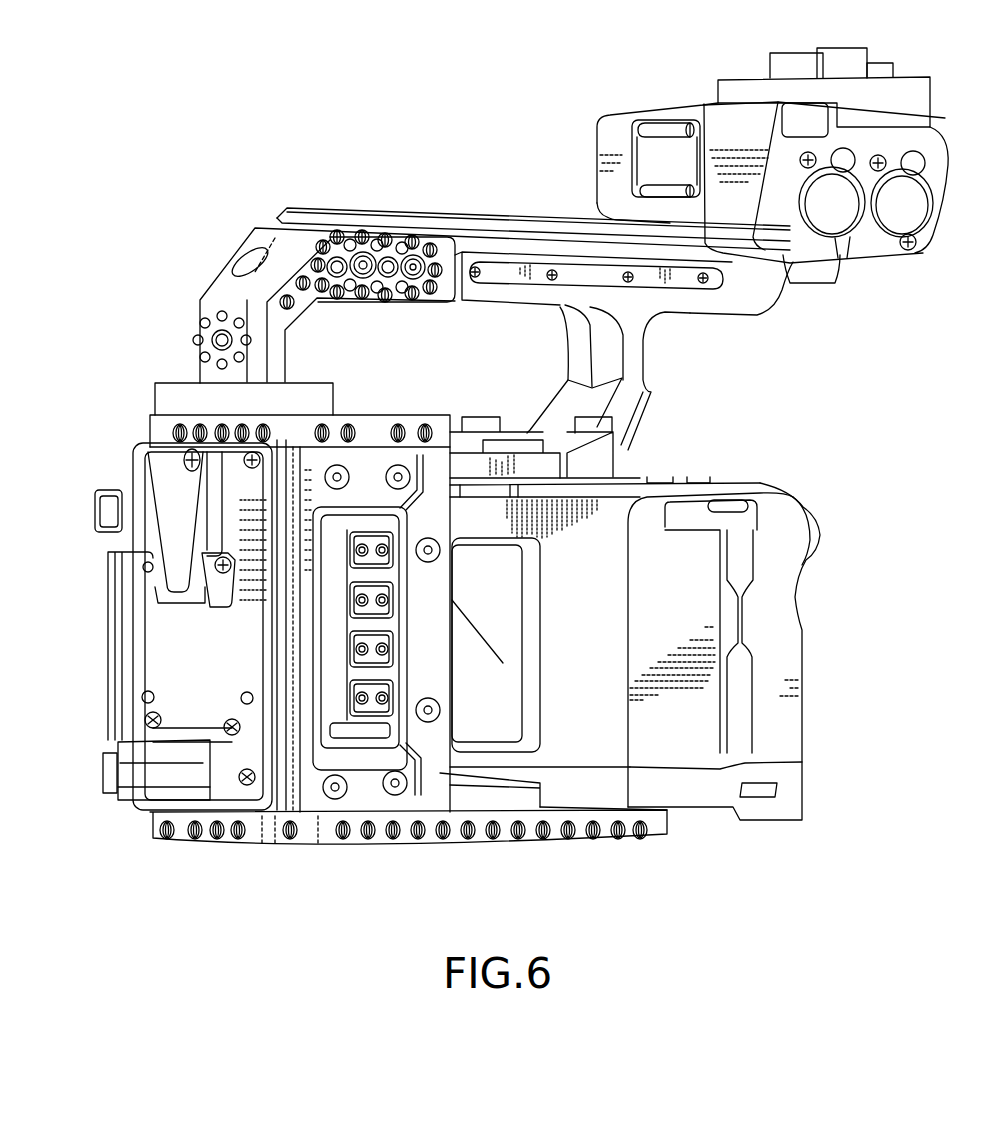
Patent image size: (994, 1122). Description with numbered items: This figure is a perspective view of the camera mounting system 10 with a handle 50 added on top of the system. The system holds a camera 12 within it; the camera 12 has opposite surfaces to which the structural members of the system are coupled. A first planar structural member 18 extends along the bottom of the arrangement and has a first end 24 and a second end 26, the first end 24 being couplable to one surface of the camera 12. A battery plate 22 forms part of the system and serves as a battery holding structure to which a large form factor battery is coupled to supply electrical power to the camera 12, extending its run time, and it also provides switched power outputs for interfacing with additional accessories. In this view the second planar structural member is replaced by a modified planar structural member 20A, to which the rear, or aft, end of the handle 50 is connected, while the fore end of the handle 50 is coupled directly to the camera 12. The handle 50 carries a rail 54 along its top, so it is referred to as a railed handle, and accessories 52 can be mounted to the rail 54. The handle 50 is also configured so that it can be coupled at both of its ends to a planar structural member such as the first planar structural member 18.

The camera mounting system 10 is at (128, 398).
The camera 12 is at (740, 485).
The first planar structural member 18 is at (353, 845).
The modified planar structural member 20A is at (383, 410).
The battery plate 22 is at (100, 632).
The first end 24 is at (642, 847).
The second end 26 is at (268, 848).
The handle 50 is at (527, 203).
The accessories 52 is at (737, 82).
The rail 54 is at (388, 221).